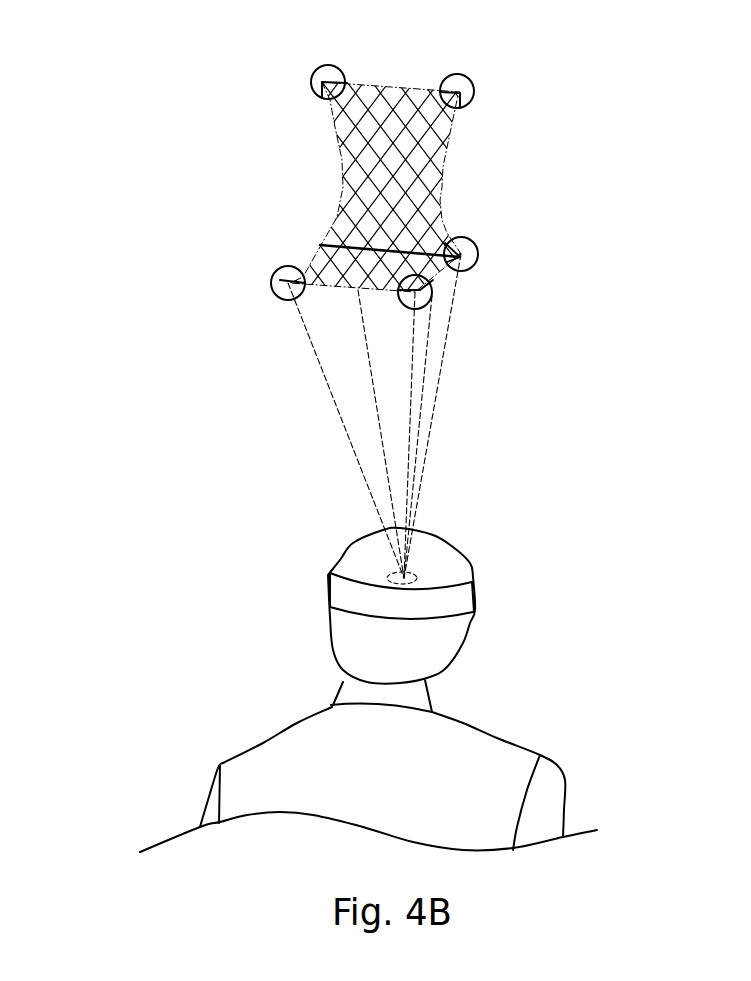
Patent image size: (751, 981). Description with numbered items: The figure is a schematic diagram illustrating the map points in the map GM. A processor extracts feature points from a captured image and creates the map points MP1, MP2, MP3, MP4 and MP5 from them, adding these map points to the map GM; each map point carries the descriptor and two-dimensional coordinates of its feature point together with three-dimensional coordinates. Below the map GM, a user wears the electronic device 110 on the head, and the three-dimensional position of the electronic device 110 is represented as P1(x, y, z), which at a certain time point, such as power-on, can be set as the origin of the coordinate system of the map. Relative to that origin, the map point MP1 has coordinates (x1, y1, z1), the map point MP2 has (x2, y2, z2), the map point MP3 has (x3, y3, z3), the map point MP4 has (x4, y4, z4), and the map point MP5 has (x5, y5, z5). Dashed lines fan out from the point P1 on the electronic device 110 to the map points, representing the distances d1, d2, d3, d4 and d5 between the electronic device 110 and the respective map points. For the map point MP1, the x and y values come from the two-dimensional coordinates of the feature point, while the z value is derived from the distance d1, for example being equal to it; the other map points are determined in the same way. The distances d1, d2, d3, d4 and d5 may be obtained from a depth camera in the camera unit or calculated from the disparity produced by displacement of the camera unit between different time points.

The map GM is at (95, 42).
The map point MP1 is at (474, 92).
The map point MP2 is at (311, 82).
The map point MP3 is at (271, 279).
The map point MP4 is at (432, 289).
The map point MP5 is at (477, 248).
The distance d1 is at (367, 350).
The distance d2 is at (428, 359).
The distance d3 is at (337, 405).
The distance d4 is at (410, 407).
The distance d5 is at (452, 308).
The 3D coordinates of the electronic device P1 is at (331, 585).
The electronic device 110 is at (476, 596).